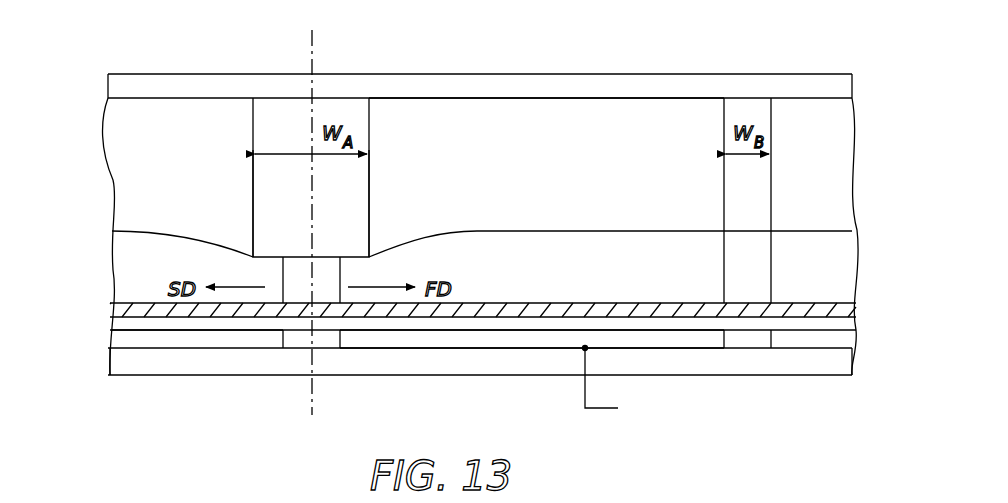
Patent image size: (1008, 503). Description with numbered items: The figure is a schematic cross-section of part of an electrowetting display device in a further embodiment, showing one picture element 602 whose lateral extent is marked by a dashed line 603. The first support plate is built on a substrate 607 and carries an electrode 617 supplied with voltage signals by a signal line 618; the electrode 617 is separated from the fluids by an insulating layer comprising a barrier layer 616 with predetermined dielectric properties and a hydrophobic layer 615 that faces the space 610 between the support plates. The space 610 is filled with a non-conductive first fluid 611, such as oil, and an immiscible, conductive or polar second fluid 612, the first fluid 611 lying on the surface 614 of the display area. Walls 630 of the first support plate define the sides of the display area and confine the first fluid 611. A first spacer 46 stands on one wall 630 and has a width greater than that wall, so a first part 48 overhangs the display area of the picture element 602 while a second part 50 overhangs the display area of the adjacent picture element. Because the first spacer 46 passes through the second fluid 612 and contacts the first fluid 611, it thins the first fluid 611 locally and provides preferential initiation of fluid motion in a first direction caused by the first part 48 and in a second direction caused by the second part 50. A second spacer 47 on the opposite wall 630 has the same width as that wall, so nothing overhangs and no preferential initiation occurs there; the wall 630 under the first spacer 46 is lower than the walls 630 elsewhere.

The picture element 602 is at (158, 70).
The dashed line 603 is at (312, 42).
The substrate 607 is at (808, 84).
The space 610 is at (452, 134).
The first fluid 611 is at (126, 270).
The second fluid 612 is at (672, 135).
The display area surface 614 is at (608, 302).
The hydrophobic layer 615 is at (372, 310).
The barrier layer 616 is at (445, 330).
The electrode 617 is at (520, 340).
The signal line 618 is at (600, 408).
The wall 630 is at (300, 290).
The first spacer 46 is at (277, 112).
The second spacer 47 is at (762, 190).
The first part 48 is at (362, 206).
The second part 50 is at (262, 206).